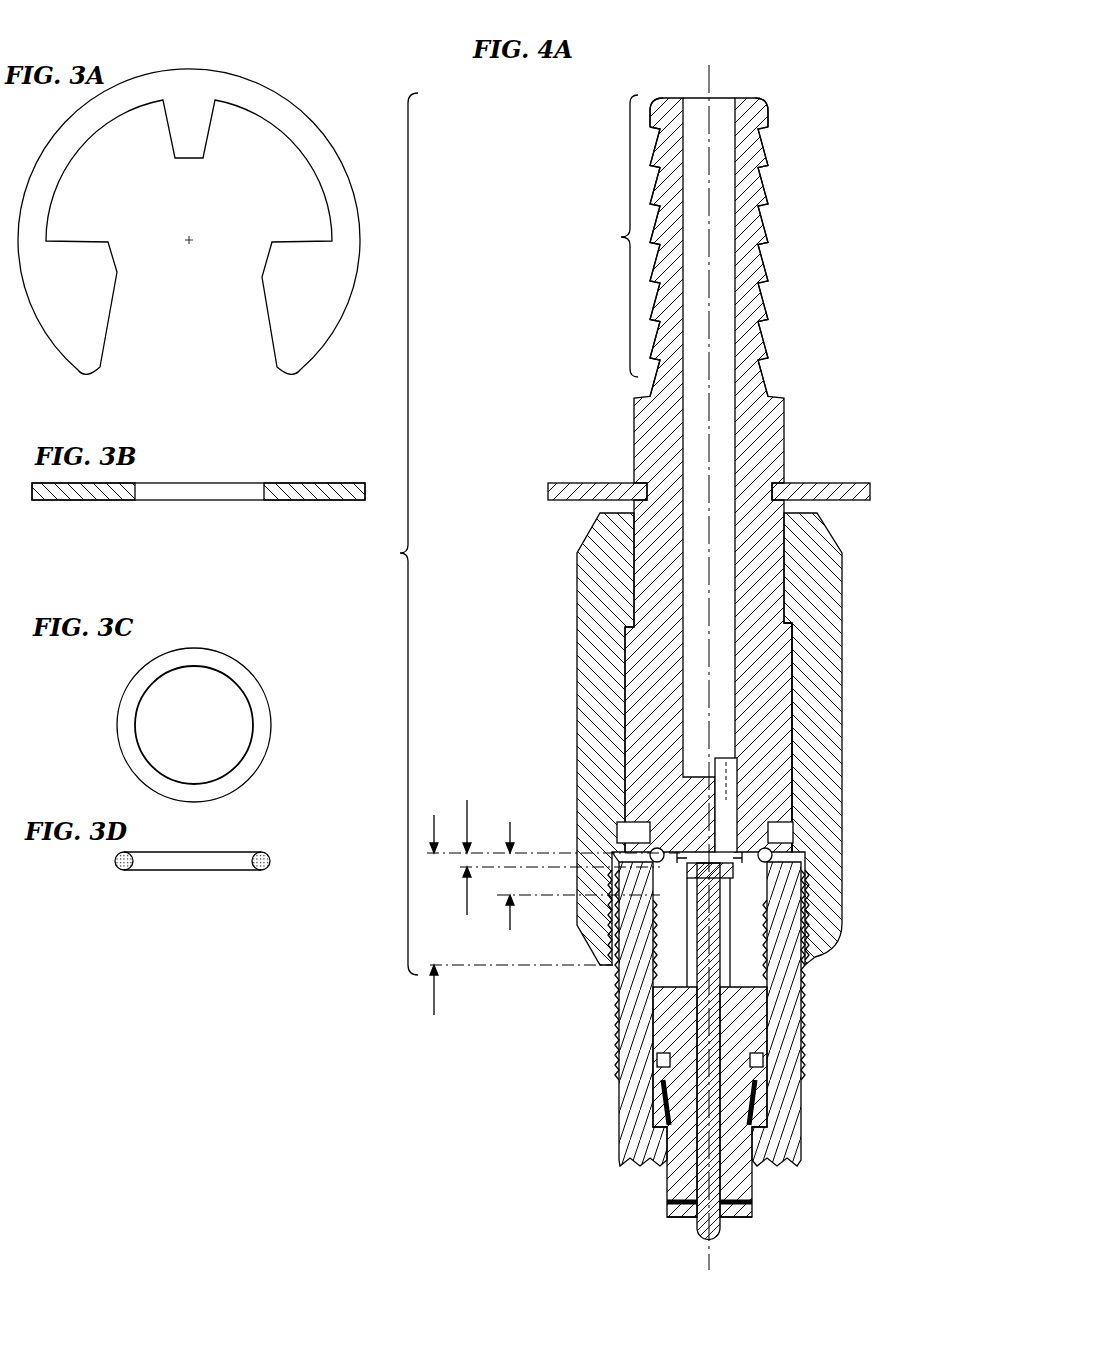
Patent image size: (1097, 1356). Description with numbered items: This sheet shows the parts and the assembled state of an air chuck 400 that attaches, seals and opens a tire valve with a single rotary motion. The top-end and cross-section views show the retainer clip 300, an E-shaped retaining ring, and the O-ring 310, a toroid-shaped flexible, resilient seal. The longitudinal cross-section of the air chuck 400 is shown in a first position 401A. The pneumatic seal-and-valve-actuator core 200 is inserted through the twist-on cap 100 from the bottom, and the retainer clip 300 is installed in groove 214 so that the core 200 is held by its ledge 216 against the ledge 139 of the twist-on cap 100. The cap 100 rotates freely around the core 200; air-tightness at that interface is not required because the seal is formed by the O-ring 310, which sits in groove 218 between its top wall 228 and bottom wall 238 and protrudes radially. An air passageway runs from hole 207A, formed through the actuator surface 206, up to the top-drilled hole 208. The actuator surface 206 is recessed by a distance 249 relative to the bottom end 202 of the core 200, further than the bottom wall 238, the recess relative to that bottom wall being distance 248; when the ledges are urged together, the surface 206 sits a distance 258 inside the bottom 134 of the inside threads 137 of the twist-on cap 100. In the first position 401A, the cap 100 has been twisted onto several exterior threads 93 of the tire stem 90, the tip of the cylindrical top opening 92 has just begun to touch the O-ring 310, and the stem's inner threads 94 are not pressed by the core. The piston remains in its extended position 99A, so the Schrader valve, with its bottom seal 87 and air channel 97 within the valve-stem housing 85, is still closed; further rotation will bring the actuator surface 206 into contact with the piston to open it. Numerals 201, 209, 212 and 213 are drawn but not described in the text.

In FIG. 3A, the retainer clip 300 is at (320, 125).
In FIG. 3B, the retainer clip 300 is at (332, 477).
In FIG. 4A, the retainer clip 300 is at (559, 483).
In FIG. 3C, the O-ring 310 is at (234, 651).
In FIG. 3D, the O-ring 310 is at (248, 847).
In FIG. 4A, the O-ring 310 is at (772, 856).
In FIG. 4A, the pneumatic seal-and-valve-actuator core 200 is at (656, 96).
In FIG. 4A, the top end of body 201 is at (672, 97).
In FIG. 4A, the central axis / lumen 209 is at (712, 90).
In FIG. 4A, the top-drilled hole 208 is at (720, 112).
In FIG. 4A, the first position 401A is at (825, 103).
In FIG. 4A, the barbs 212 is at (767, 142).
In FIG. 4A, the barbed section 213 is at (609, 236).
In FIG. 4A, the groove 214 is at (779, 491).
In FIG. 4A, the twist-on cap 100 is at (835, 546).
In FIG. 4A, the ledge 139 is at (790, 620).
In FIG. 4A, the ledge 216 is at (790, 640).
In FIG. 4A, the hole 207A is at (735, 784).
In FIG. 4A, the groove 218 is at (800, 840).
In FIG. 4A, the bottom wall 238 is at (650, 858).
In FIG. 4A, the top wall 228 is at (652, 852).
In FIG. 4A, the bottom end 202 is at (745, 892).
In FIG. 4A, the extended position 99A is at (740, 975).
In FIG. 4A, the actuator surface 206 is at (655, 930).
In FIG. 4A, the tire stem 90 is at (795, 1165).
In FIG. 4A, the exterior threads 93 is at (622, 995).
In FIG. 4A, the bottom 134 is at (808, 968).
In FIG. 4A, the inside threads 137 is at (810, 947).
In FIG. 4A, the cylindrical top opening 92 is at (618, 903).
In FIG. 4A, the inner threads 94 is at (652, 1045).
In FIG. 4A, the valve-stem housing 85 is at (660, 1105).
In FIG. 4A, the air channel 97 is at (690, 1197).
In FIG. 4A, the bottom seal 87 is at (690, 1226).
In FIG. 4A, the distance 258 is at (550, 904).
In FIG. 4A, the distance 248 is at (556, 848).
In FIG. 4A, the distance 249 is at (574, 868).
In FIG. 4A, the air chuck 400 is at (391, 534).